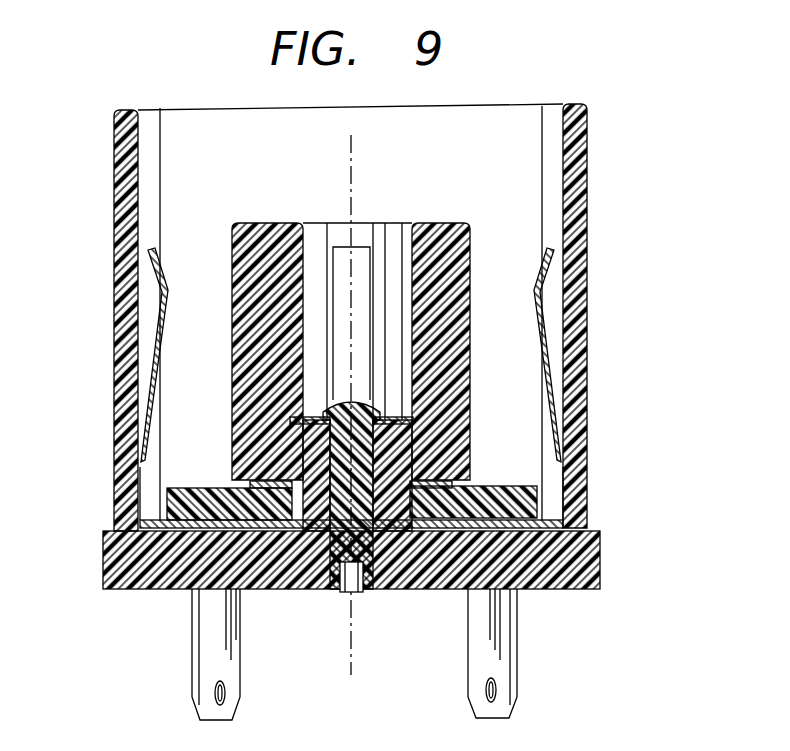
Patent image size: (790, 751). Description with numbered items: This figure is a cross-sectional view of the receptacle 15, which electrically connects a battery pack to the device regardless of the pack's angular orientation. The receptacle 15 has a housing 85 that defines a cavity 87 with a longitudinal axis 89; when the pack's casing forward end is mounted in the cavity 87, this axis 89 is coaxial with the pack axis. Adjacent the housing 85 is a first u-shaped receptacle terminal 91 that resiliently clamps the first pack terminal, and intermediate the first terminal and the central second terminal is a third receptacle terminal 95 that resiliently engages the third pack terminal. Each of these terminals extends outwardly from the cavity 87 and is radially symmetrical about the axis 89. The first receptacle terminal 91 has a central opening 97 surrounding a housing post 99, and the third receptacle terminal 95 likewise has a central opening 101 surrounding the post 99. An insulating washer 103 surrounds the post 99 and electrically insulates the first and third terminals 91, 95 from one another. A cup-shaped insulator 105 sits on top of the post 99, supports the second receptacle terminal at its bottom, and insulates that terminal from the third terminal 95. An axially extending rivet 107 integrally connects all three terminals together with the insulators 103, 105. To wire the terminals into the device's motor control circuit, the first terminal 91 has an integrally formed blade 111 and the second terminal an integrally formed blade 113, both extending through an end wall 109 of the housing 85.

The receptacle 15 is at (106, 106).
The housing 85 is at (587, 170).
The cavity 87 is at (458, 127).
The longitudinal axis 89 is at (351, 137).
The first u-shaped receptacle terminal 91 is at (168, 272).
The third receptacle terminal 95 is at (248, 486).
The central opening 97 is at (318, 590).
The housing post 99 is at (383, 545).
The central opening 101 is at (418, 457).
The insulating washer 103 is at (147, 442).
The cup-shaped insulator 105 is at (278, 222).
The rivet 107 is at (363, 594).
The end wall 109 is at (604, 534).
The blade 111 is at (215, 638).
The blade 113 is at (495, 625).